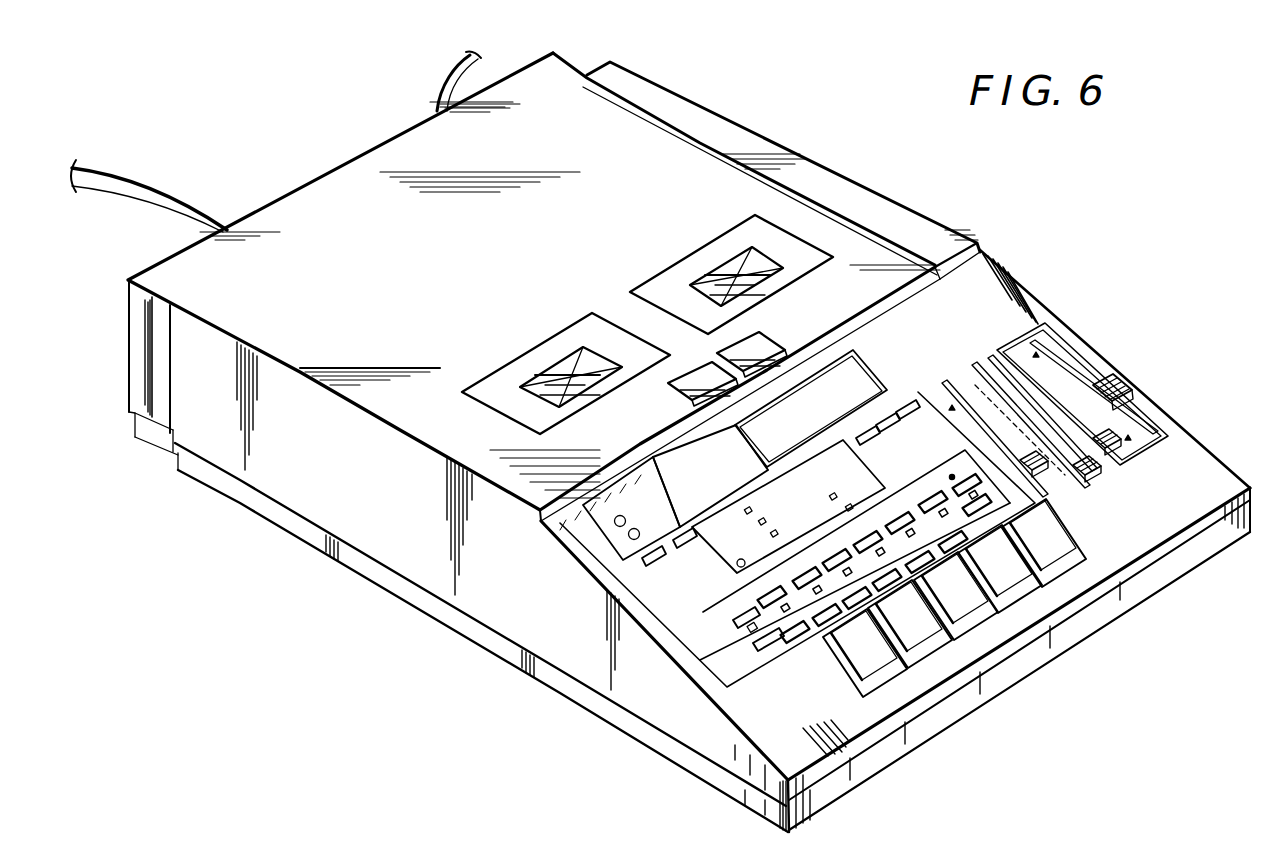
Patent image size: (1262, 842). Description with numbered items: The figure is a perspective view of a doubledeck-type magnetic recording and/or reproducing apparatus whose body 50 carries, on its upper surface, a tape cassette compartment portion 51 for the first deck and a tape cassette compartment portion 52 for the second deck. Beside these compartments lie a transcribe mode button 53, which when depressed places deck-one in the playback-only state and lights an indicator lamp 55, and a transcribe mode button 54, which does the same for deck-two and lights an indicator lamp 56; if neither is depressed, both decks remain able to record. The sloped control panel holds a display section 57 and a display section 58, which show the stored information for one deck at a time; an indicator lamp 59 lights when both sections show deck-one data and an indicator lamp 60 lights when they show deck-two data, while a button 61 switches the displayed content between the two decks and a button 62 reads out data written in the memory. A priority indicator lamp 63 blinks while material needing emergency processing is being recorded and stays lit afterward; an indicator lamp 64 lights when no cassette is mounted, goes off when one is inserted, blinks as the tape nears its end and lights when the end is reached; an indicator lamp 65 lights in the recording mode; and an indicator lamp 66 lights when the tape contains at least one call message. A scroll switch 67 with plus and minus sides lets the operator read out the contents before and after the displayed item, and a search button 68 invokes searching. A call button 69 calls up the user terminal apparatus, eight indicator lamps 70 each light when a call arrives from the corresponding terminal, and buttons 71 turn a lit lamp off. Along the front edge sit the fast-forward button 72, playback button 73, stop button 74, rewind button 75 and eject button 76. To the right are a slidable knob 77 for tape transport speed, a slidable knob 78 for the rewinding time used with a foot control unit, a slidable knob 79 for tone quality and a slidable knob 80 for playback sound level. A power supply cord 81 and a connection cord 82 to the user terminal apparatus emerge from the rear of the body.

The body 50 is at (290, 500).
The tape cassette compartment portion 51 is at (565, 337).
The tape cassette compartment portion 52 is at (702, 257).
The transcribe mode button 53 is at (690, 378).
The transcribe mode button 54 is at (762, 344).
The indicator lamp 55 is at (703, 410).
The indicator lamp 56 is at (813, 350).
The display section 57 is at (650, 480).
The display section 58 is at (870, 367).
The indicator lamp 59 is at (614, 522).
The indicator lamp 60 is at (628, 535).
The button 61 is at (615, 588).
The button 62 is at (660, 565).
The priority indicator lamp 63 is at (723, 573).
The indicator lamp 64 is at (752, 515).
The indicator lamp 65 is at (858, 482).
The indicator lamp 66 is at (893, 493).
The scroll switch 67 is at (862, 435).
The search button 68 is at (902, 405).
The call button 69 is at (730, 614).
The indicator lamps 70 is at (740, 638).
The buttons 71 is at (720, 687).
The fast-forward button 72 is at (1053, 558).
The playback button 73 is at (1012, 583).
The stop button 74 is at (970, 610).
The rewind button 75 is at (927, 635).
The eject button 76 is at (878, 662).
The slidable knob 77 is at (1040, 470).
The slidable knob 78 is at (1090, 478).
The slidable knob 79 is at (1110, 450).
The slidable knob 80 is at (1112, 382).
The power supply cord 81 is at (174, 183).
The connection cord 82 is at (437, 90).